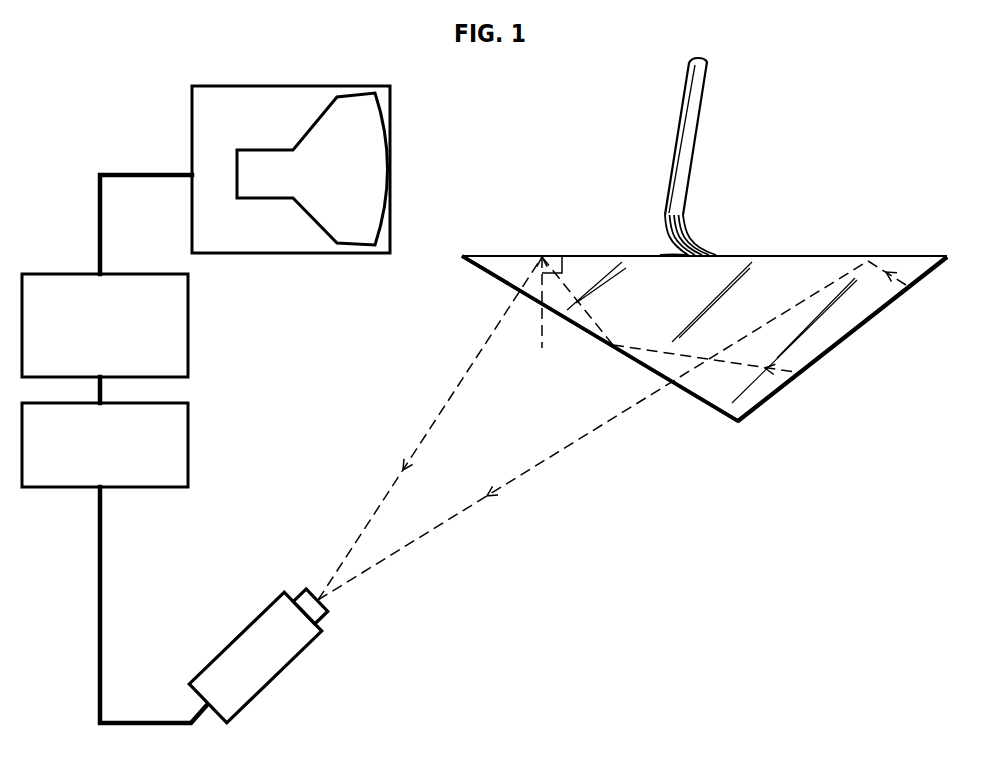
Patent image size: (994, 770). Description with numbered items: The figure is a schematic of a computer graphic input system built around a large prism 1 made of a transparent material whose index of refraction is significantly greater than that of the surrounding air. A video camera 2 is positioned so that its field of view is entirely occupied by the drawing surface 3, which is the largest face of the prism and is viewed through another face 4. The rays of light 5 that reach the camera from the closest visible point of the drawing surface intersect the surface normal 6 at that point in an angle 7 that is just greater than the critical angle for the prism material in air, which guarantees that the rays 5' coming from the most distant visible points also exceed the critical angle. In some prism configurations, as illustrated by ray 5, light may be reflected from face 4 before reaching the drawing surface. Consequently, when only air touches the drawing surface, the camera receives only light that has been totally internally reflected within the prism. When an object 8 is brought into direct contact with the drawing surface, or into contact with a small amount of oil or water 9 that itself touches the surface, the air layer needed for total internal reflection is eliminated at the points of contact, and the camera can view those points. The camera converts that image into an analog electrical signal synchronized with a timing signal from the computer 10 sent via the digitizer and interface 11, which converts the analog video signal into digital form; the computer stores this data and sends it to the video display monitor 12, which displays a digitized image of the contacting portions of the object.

The prism 1 is at (848, 324).
The video camera 2 is at (280, 652).
The drawing surface 3 is at (808, 255).
The face 4 is at (716, 407).
The rays of light 5 is at (430, 428).
The rays 5' is at (612, 430).
The surface normal 6 is at (544, 328).
The angle 7 is at (518, 283).
The object 8 is at (684, 235).
The oil or water 9 is at (663, 253).
The computer 10 is at (176, 358).
The digitizer and interface 11 is at (181, 468).
The video display monitor 12 is at (204, 116).